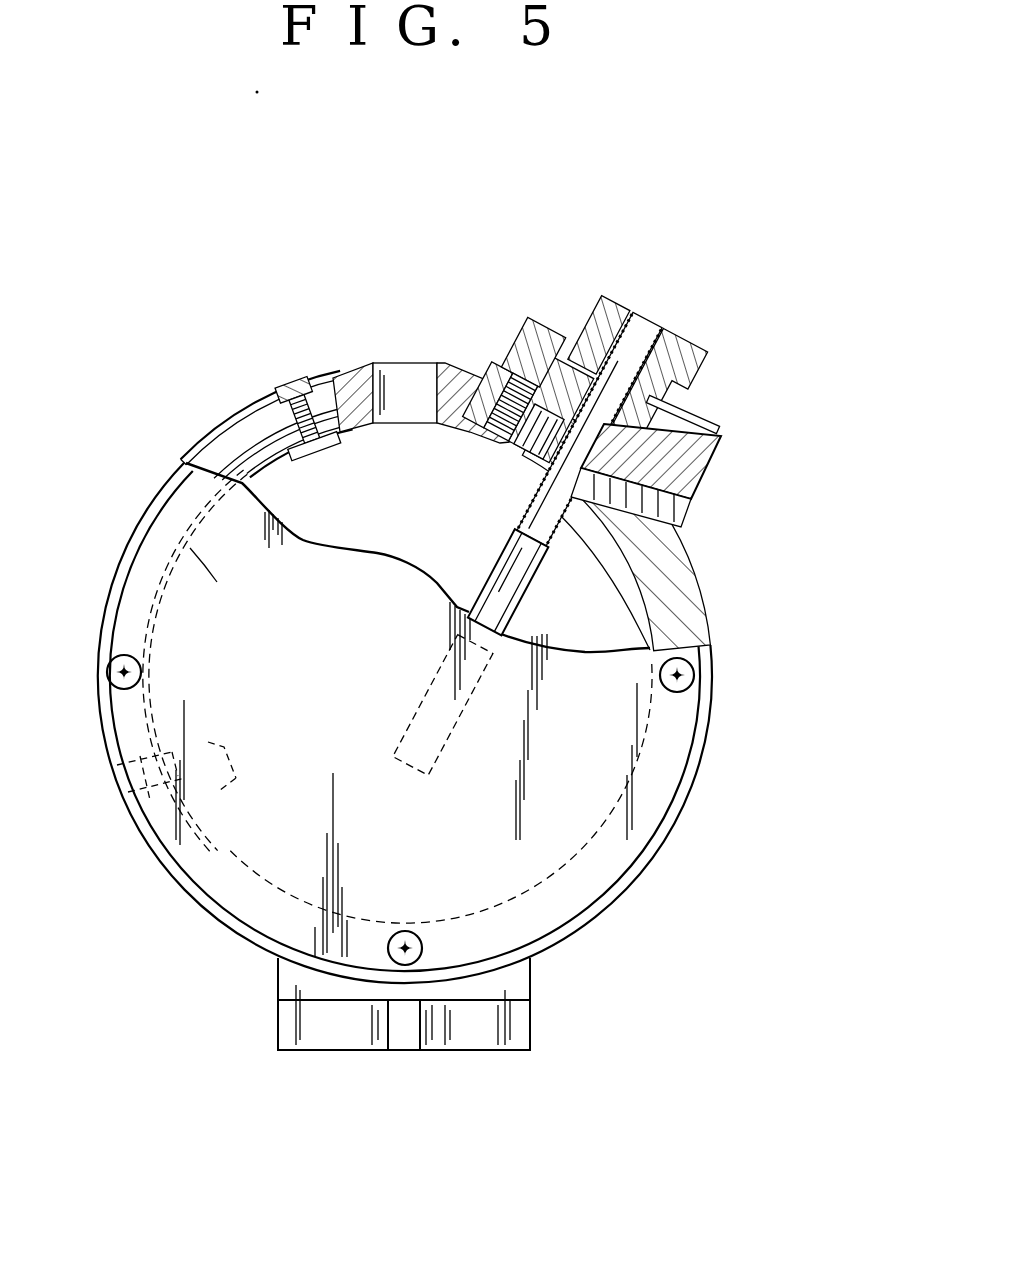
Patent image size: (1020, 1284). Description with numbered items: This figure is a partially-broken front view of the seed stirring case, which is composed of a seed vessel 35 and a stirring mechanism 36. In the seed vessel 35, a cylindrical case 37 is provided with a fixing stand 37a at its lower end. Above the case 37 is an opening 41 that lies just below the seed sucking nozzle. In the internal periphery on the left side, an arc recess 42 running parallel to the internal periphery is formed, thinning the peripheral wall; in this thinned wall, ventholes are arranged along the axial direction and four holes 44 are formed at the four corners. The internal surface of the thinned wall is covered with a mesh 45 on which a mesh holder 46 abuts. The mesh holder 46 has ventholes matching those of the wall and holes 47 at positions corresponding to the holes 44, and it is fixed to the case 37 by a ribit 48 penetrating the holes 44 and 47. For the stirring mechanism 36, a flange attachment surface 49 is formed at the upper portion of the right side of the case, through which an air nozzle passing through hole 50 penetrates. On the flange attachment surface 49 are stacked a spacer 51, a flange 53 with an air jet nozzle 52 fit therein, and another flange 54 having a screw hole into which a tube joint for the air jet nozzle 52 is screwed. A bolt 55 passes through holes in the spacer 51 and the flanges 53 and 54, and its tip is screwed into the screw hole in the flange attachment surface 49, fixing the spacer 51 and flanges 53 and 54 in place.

The seed vessel 35 is at (185, 396).
The stirring mechanism 36 is at (503, 327).
The cylindrical case 37 is at (220, 912).
The fixing stand 37a is at (498, 1052).
The opening 41 is at (435, 422).
The arc recess 42 is at (280, 465).
The holes 44 is at (318, 405).
The mesh 45 is at (283, 550).
The mesh holder 46 is at (218, 582).
The holes 47 is at (318, 442).
The ribit 48 is at (298, 386).
The flange attachment surface 49 is at (713, 456).
The air nozzle passing through hole 50 is at (660, 545).
The spacer 51 is at (693, 495).
The air jet nozzle 52 is at (648, 622).
The flange 53 is at (722, 438).
The flange 54 is at (657, 410).
The bolt 55 is at (565, 325).